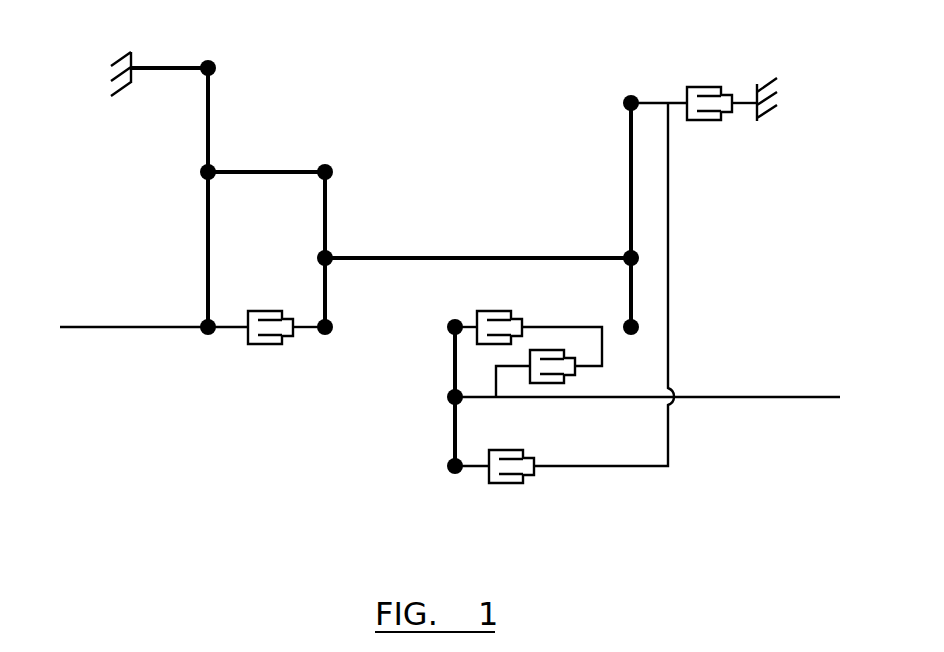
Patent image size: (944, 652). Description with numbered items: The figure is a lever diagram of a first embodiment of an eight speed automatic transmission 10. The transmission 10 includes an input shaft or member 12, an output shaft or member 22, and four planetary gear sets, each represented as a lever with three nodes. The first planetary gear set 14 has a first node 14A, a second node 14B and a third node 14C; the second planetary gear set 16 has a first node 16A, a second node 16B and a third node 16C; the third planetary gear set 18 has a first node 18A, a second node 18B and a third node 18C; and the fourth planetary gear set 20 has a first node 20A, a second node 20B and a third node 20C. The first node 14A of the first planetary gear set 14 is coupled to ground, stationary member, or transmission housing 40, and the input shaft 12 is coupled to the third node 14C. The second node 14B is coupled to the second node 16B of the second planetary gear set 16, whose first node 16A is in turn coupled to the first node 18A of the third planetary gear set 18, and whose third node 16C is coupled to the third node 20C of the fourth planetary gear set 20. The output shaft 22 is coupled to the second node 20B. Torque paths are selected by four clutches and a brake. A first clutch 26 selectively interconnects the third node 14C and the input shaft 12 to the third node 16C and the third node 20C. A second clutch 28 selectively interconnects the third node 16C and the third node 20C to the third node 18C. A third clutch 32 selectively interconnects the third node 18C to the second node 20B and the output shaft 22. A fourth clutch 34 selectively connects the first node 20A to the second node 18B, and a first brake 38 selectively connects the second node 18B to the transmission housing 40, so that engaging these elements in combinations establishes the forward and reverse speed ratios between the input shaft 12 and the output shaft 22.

The automatic transmission 10 is at (463, 117).
The input shaft 12 is at (127, 329).
The first planetary gear set 14 is at (187, 203).
The first node of first planetary gear set 14A is at (203, 78).
The second node of first planetary gear set 14B is at (213, 167).
The third node of first planetary gear set 14C is at (204, 322).
The second planetary gear set 16 is at (298, 263).
The first node of second planetary gear set 16A is at (330, 256).
The second node of second planetary gear set 16B is at (330, 170).
The third node of second planetary gear set 16C is at (323, 345).
The third planetary gear set 18 is at (602, 176).
The first node of third planetary gear set 18A is at (637, 256).
The second node of third planetary gear set 18B is at (634, 96).
The third node of third planetary gear set 18C is at (633, 338).
The fourth planetary gear set 20 is at (412, 432).
The first node of fourth planetary gear set 20A is at (454, 476).
The second node of fourth planetary gear set 20B is at (448, 395).
The third node of fourth planetary gear set 20C is at (452, 320).
The output shaft 22 is at (776, 400).
The first clutch 26 is at (263, 347).
The second clutch 28 is at (490, 310).
The third clutch 32 is at (557, 386).
The fourth clutch 34 is at (512, 486).
The first brake 38 is at (714, 87).
The transmission housing 40 is at (132, 56).